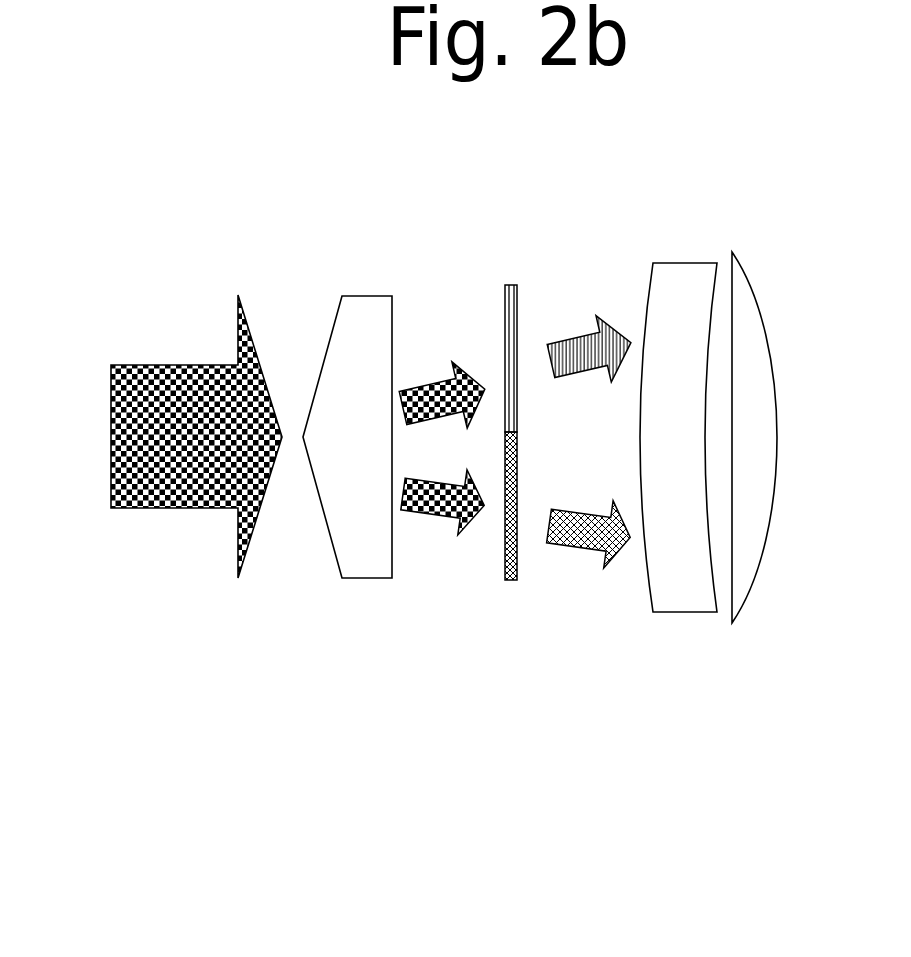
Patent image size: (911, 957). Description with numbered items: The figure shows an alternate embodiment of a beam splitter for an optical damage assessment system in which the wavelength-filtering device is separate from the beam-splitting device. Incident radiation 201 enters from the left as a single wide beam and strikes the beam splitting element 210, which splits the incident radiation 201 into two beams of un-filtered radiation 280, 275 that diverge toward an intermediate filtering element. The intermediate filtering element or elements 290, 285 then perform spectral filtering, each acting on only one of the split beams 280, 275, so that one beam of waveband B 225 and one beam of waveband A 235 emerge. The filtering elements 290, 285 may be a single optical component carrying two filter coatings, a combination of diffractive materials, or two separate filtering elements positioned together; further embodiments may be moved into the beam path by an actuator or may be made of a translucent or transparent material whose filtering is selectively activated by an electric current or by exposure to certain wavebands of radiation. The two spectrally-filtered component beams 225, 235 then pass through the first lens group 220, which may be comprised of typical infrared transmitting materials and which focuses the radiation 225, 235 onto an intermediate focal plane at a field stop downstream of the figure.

The incident beam 201 is at (187, 460).
The beam splitting element 210 is at (282, 511).
The un-filtered radiation beam 280 is at (386, 339).
The un-filtered radiation beam 275 is at (402, 615).
The intermediate filtering element 290 is at (429, 313).
The intermediate filtering element 285 is at (435, 625).
The waveband B beam 225 is at (609, 281).
The waveband A beam 235 is at (620, 603).
The first lens group 220 is at (768, 392).